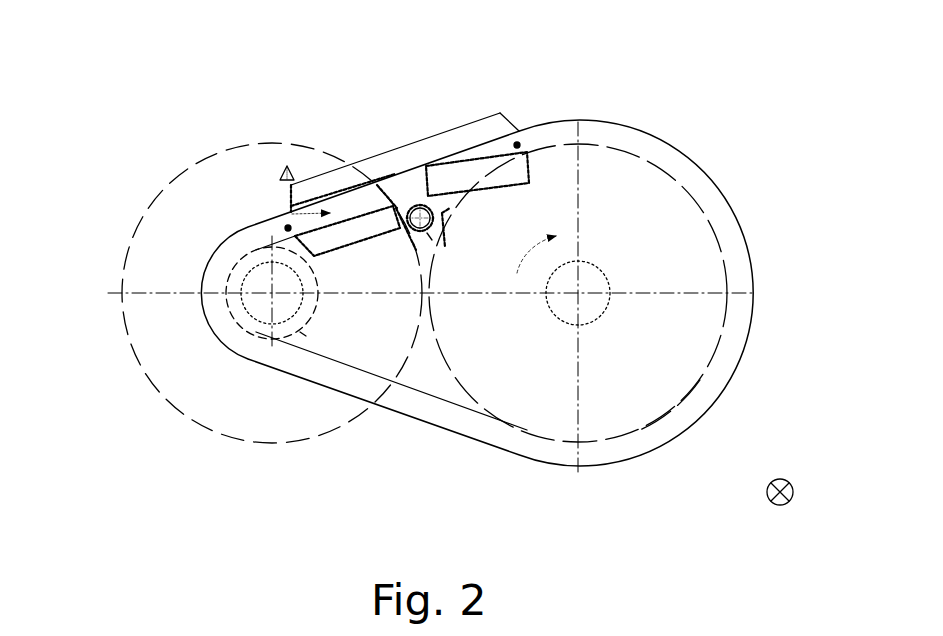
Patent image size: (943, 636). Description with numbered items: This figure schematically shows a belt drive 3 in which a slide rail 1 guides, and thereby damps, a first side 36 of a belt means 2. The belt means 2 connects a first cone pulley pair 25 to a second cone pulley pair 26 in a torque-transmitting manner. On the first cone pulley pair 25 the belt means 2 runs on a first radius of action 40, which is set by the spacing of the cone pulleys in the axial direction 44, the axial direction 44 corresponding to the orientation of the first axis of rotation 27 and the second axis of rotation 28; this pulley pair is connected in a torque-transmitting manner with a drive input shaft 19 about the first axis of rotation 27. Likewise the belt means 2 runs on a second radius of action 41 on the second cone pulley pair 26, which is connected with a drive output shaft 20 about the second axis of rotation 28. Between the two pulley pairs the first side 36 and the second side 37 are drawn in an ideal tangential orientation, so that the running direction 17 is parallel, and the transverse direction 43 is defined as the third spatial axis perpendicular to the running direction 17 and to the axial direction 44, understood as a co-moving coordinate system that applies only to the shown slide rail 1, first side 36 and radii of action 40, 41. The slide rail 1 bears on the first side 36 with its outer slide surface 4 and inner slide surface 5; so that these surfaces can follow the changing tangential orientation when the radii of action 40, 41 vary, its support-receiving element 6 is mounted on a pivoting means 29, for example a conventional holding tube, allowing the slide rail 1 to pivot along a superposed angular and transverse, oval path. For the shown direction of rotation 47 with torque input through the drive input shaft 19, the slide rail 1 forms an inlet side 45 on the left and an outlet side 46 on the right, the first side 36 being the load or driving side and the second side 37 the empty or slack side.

The slide rail 1 is at (314, 172).
The belt means 2 is at (391, 153).
The belt drive 3 is at (128, 96).
The outer slide surface 4 is at (364, 202).
The inner slide surface 5 is at (453, 176).
The support-receiving element 6 is at (458, 235).
The running direction 17 is at (312, 220).
The drive input shaft 19 is at (583, 326).
The drive output shaft 20 is at (257, 267).
The first cone pulley pair 25 is at (700, 262).
The second cone pulley pair 26 is at (143, 267).
The first axis of rotation 27 is at (580, 293).
The second axis of rotation 28 is at (272, 293).
The pivoting means 29 is at (428, 240).
The first side 36 is at (517, 145).
The second side 37 is at (460, 423).
The first radius of action 40 is at (708, 372).
The second radius of action 41 is at (300, 332).
The transverse direction 43 is at (282, 178).
The axial direction 44 is at (790, 500).
The inlet side 45 is at (288, 228).
The outlet side 46 is at (517, 270).
The direction of rotation 47 is at (578, 122).